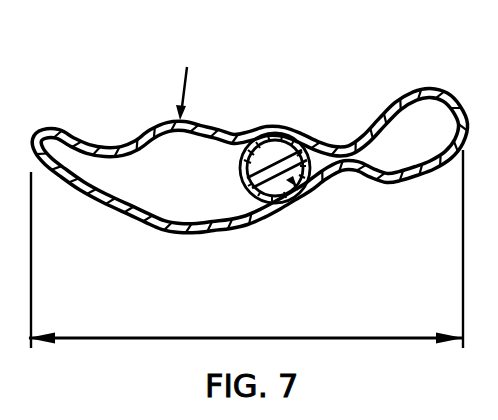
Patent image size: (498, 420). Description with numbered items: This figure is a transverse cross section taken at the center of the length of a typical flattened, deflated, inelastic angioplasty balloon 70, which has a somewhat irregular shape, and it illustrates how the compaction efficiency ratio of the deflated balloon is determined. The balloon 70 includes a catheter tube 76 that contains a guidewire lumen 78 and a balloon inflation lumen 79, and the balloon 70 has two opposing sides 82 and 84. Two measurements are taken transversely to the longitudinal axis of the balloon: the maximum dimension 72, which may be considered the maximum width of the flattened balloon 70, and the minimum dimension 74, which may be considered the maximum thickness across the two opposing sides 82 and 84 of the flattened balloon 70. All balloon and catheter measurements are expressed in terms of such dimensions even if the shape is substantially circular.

The angioplasty balloon 70 is at (389, 192).
The maximum dimension 72 is at (236, 337).
The minimum dimension 74 is at (157, 243).
The catheter tube 76 is at (221, 129).
The guidewire lumen 78 is at (267, 158).
The balloon inflation lumen 79 is at (289, 183).
The opposing side 82 is at (105, 146).
The opposing side 84 is at (66, 178).